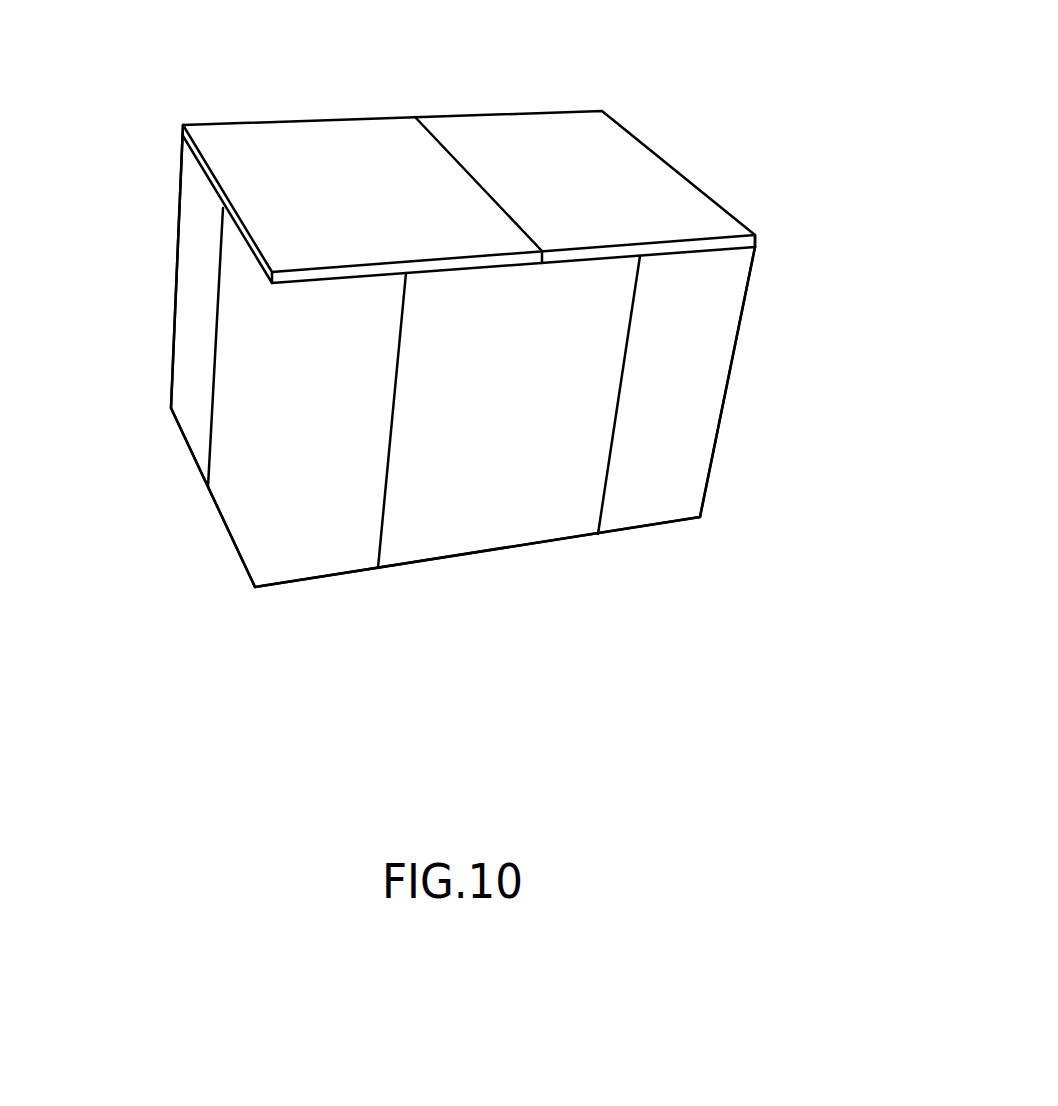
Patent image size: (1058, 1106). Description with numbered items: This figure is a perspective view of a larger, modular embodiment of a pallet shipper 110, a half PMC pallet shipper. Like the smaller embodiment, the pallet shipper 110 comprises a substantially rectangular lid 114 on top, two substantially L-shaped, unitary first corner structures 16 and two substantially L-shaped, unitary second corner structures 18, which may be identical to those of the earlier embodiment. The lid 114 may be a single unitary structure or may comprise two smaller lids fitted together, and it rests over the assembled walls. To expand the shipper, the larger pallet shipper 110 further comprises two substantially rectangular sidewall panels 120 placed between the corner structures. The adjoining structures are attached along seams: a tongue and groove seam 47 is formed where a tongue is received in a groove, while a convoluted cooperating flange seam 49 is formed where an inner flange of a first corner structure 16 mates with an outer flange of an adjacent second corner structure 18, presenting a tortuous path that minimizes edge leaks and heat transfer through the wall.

The pallet shipper 110 is at (782, 193).
The lid 114 is at (615, 182).
The second corner structure 18 is at (202, 247).
The cooperating flange seam 49 is at (218, 350).
The first corner structure 16 is at (242, 497).
The tongue and groove seam 47 is at (388, 452).
The sidewall panel 120 is at (502, 512).